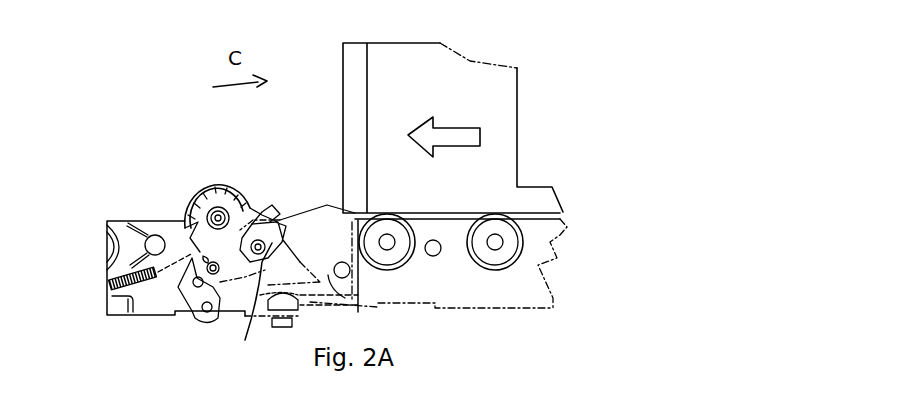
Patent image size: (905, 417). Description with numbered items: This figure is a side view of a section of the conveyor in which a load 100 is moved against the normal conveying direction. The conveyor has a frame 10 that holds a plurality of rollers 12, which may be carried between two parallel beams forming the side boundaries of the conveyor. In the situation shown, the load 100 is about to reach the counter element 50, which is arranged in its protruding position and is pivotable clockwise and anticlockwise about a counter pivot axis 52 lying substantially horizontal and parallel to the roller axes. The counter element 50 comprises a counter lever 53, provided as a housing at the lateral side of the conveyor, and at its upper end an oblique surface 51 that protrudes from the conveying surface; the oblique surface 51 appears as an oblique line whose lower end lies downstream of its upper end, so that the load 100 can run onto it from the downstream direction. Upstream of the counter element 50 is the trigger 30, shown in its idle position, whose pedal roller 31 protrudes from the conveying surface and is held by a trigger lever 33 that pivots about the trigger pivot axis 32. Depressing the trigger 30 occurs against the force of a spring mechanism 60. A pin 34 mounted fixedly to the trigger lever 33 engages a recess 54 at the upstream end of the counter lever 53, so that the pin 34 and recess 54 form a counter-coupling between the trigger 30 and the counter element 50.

The load 100 is at (445, 56).
The frame 10 is at (463, 288).
The rollers 12 is at (496, 262).
The trigger 30 is at (197, 297).
The pedal roller 31 is at (199, 187).
The trigger pivot axis 32 is at (215, 313).
The trigger lever 33 is at (233, 220).
The pin 34 is at (280, 225).
The counter element 50 is at (302, 272).
The oblique surface 51 is at (330, 197).
The counter pivot axis 52 is at (350, 271).
The counter lever 53 is at (358, 305).
The recess 54 is at (245, 340).
The spring mechanism 60 is at (100, 285).